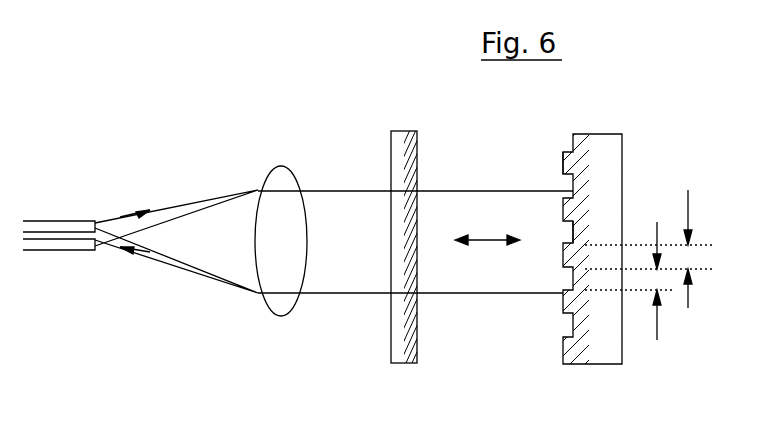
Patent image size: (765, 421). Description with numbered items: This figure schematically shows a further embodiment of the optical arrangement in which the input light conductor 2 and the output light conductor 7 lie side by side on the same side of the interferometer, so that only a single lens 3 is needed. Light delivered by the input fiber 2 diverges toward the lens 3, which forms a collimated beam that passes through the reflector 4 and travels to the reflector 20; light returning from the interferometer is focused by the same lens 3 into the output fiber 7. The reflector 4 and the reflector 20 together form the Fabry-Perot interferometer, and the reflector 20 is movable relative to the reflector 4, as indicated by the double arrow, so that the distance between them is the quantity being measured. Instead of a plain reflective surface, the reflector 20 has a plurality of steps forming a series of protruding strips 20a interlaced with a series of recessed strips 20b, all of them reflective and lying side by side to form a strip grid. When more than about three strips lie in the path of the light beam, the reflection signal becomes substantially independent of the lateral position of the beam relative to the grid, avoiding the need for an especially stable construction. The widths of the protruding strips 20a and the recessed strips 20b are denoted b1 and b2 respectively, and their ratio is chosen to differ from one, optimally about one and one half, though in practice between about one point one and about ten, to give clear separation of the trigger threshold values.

The input light conductor 2 is at (74, 221).
The output light conductor 7 is at (74, 250).
The lens 3 is at (276, 143).
The reflector 4 is at (399, 111).
The reflector 20 is at (614, 113).
The protruding strips 20a is at (574, 166).
The recessed strips 20b is at (580, 180).
The width of protruding areas b1 is at (651, 258).
The width of recessed areas b2 is at (634, 287).